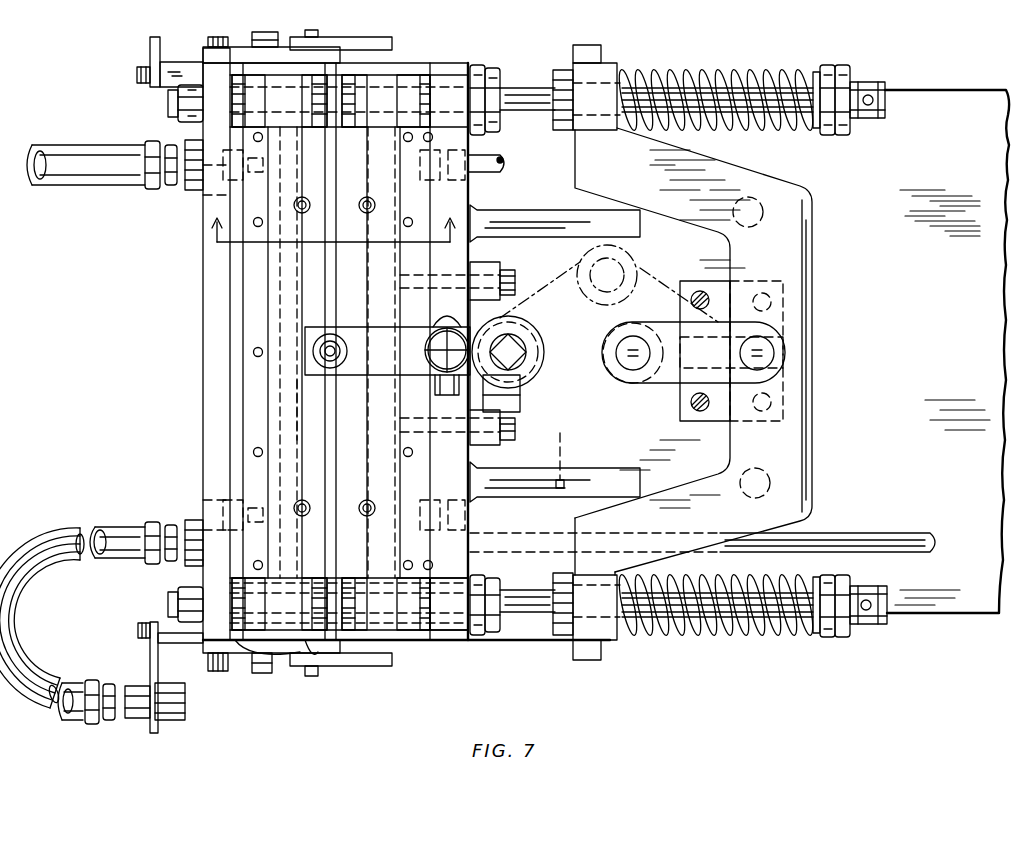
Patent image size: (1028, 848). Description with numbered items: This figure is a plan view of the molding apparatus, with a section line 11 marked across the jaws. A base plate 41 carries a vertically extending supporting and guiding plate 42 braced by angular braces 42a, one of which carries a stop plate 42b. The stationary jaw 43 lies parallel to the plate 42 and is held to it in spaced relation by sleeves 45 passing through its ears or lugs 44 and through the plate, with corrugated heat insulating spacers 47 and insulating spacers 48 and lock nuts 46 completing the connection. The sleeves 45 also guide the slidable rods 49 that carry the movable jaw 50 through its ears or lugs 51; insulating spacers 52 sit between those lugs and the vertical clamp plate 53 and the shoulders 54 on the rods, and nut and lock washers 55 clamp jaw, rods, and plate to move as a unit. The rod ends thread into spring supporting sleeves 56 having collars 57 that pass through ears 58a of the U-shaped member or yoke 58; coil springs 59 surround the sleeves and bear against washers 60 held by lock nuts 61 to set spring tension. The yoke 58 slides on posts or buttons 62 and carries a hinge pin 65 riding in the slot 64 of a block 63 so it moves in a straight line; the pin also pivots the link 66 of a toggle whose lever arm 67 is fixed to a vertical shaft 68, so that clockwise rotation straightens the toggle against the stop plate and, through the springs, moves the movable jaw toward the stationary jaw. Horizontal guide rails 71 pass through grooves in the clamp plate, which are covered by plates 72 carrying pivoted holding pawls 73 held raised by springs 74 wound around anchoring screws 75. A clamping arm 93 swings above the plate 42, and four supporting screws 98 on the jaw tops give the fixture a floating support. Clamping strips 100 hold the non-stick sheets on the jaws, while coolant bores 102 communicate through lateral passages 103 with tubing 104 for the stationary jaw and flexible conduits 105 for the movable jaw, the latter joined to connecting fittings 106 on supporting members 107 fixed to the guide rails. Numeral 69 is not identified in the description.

The section line 11- 11 is at (318, 218).
The base plate 41 is at (962, 622).
The vertically extending supporting and guiding plate 42 is at (470, 520).
The angular braces 42a is at (560, 238).
The stop plate 42b is at (566, 436).
The stationary jaw 43 is at (362, 536).
The ears or lugs 44 is at (412, 78).
The sleeves 45 is at (382, 118).
The lock nuts 46 is at (490, 68).
The corrugated heat insulating spacers 47 is at (352, 101).
The insulating spacers 48 is at (430, 632).
The slidable rods 49 is at (535, 108).
The movable jaw 50 is at (314, 352).
The ears or lugs 51 is at (302, 622).
The insulating spacers 52 is at (255, 644).
The vertical clamp plate 53 is at (212, 453).
The shoulders 54 is at (318, 654).
The nut and lock washers 55 is at (176, 113).
The spring supporting sleeves 56 is at (868, 82).
The shoulders or collars 57 is at (562, 70).
The U-shaped member or yoke 58 is at (805, 262).
The ears 58a is at (610, 70).
The coil springs 59 is at (760, 68).
The washers 60 is at (816, 640).
The lock nuts 61 is at (835, 638).
The posts or buttons 62 is at (760, 208).
The block 63 is at (686, 424).
The slot 64 is at (731, 352).
The hinge pin 65 is at (760, 352).
The link 66 is at (668, 380).
The lever arm 67 is at (600, 378).
The vertically extending shaft 68 is at (530, 336).
The block 69 is at (530, 410).
The horizontal guide rails 71 is at (182, 72).
The plates 72 is at (238, 50).
The pivoted holding pawls 73 is at (370, 42).
The springs 74 is at (310, 30).
The anchoring screws 75 is at (276, 14).
The clamping arm 93 is at (387, 355).
The supporting screws 98 is at (367, 212).
The clamping strips 100 is at (258, 373).
The bores 102 is at (296, 424).
The lateral passages 103 is at (262, 167).
The conduits or tubing 104 is at (498, 172).
The flexible conduits 105 is at (90, 172).
The connecting fittings 106 is at (170, 718).
The supporting members 107 is at (150, 48).